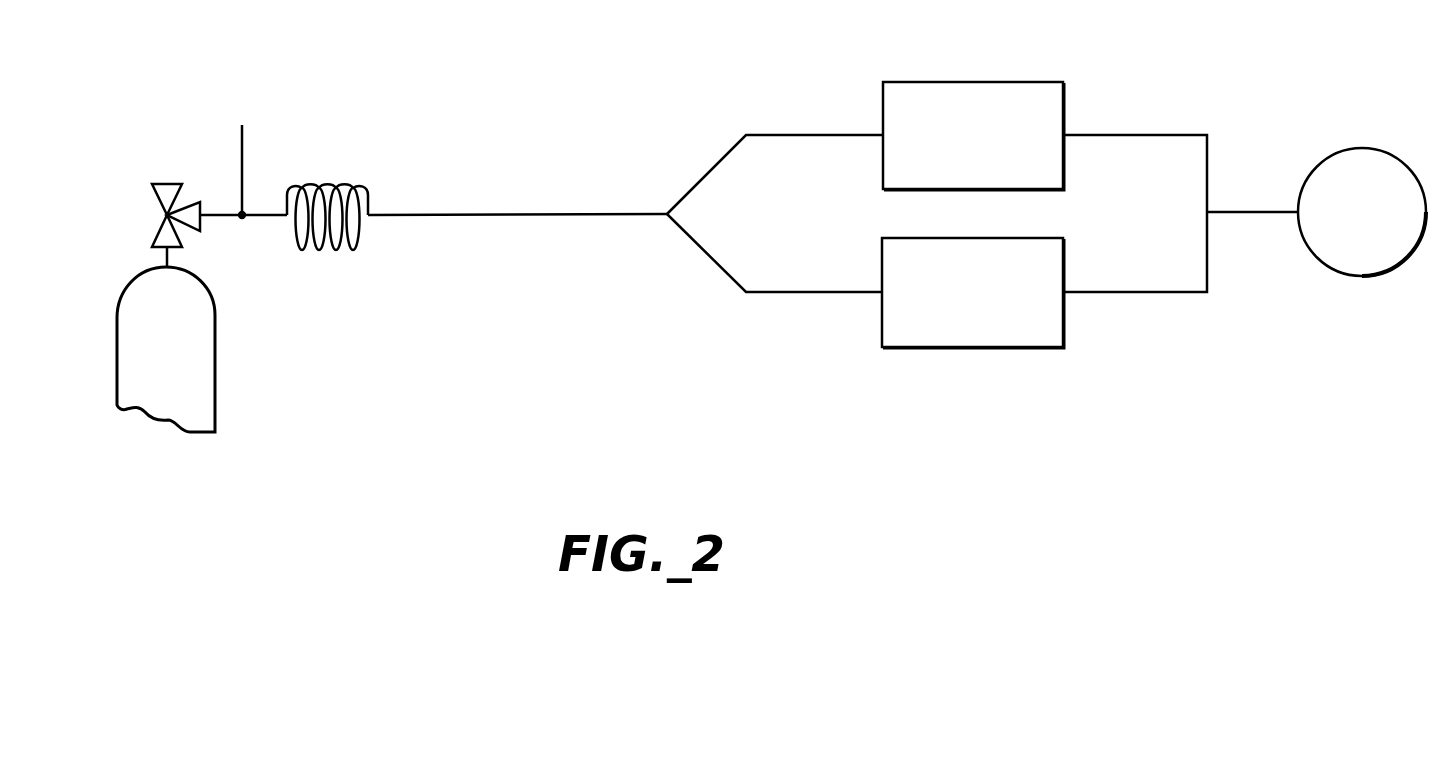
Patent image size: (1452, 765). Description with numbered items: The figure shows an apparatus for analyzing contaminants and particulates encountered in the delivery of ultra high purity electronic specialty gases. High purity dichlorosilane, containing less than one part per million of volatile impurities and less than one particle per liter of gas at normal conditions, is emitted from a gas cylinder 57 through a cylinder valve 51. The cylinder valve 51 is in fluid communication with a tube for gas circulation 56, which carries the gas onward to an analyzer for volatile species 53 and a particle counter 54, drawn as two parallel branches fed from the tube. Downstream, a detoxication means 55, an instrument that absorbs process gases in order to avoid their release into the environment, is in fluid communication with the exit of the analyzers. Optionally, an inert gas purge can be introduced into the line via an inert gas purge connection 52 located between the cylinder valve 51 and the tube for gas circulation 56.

The cylinder valve 51 is at (199, 202).
The inert gas purge connection 52 is at (243, 160).
The analyzer for volatile species 53 is at (1033, 90).
The particle counter 54 is at (1033, 255).
The detoxication means 55 is at (1383, 163).
The tube for gas circulation 56 is at (438, 213).
The gas cylinder 57 is at (217, 340).